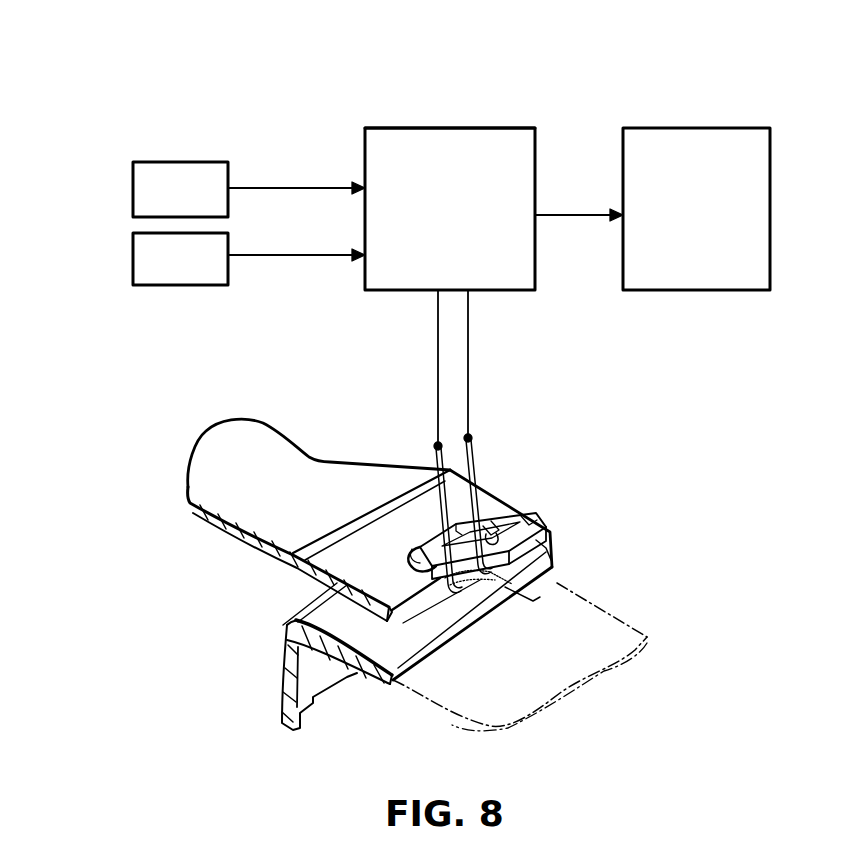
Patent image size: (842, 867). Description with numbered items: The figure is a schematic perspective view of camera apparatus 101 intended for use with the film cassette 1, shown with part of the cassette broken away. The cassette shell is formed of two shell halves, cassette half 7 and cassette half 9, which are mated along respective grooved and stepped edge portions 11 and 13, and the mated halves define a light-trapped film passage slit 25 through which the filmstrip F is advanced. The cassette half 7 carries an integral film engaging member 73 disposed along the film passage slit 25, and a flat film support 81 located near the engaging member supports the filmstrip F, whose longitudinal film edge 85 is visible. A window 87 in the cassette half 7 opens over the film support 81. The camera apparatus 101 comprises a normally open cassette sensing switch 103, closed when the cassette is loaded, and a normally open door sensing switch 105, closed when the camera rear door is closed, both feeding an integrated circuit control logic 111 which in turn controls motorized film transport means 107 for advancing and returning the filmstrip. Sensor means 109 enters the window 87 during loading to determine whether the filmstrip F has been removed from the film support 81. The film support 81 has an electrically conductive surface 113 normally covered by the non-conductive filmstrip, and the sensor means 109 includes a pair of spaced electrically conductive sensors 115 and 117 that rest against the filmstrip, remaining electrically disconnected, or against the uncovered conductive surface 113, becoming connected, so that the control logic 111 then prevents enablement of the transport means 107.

The film cassette 1 is at (172, 478).
The cassette half 7 is at (323, 480).
The cassette half 9 is at (313, 696).
The grooved and stepped edge portion 11 is at (550, 551).
The grooved and stepped edge portion 13 is at (554, 562).
The film passage slit 25 is at (397, 614).
The film engaging member 73 is at (423, 541).
The film support 81 is at (440, 616).
The longitudinal film edge 85 is at (606, 600).
The window 87 is at (490, 536).
The camera apparatus 101 is at (350, 120).
The cassette sensing switch 103 is at (133, 192).
The door sensing switch 105 is at (133, 266).
The motorized film transport means 107 is at (680, 142).
The sensor means 109 is at (443, 380).
The integrated circuit control logic 111 is at (465, 145).
The electrically conductive surface 113 is at (487, 593).
The electrically conductive sensor 115 is at (533, 601).
The electrically conductive sensor 117 is at (490, 592).
The filmstrip F is at (582, 687).